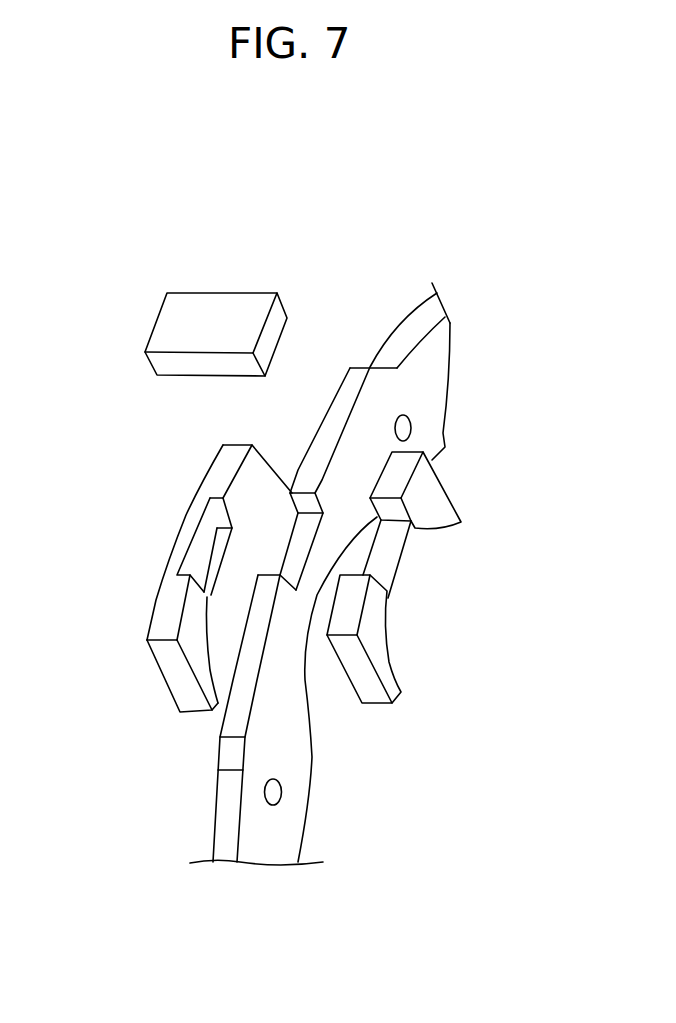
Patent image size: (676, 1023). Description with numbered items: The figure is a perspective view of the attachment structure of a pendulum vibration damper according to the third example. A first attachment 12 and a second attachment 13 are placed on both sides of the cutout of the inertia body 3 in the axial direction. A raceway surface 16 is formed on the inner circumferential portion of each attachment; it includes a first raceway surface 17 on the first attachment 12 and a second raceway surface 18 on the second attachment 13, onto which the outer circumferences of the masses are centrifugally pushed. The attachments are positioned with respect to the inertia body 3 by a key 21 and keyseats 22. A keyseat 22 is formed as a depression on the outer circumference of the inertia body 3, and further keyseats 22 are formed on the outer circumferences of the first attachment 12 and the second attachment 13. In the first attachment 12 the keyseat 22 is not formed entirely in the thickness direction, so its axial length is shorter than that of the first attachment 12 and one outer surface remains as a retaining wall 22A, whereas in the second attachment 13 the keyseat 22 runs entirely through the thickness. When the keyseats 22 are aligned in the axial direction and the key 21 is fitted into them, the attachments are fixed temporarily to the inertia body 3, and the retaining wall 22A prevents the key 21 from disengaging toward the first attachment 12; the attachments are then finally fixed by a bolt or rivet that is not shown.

The inertia body 3 is at (277, 855).
The first attachment 12 is at (212, 478).
The second attachment 13 is at (438, 501).
The raceway surface 16 is at (303, 666).
The first raceway surface 17 is at (212, 663).
The second raceway surface 18 is at (390, 632).
The key 21 is at (190, 300).
The keyseat 22 is at (215, 552).
The retaining wall 22A is at (197, 548).